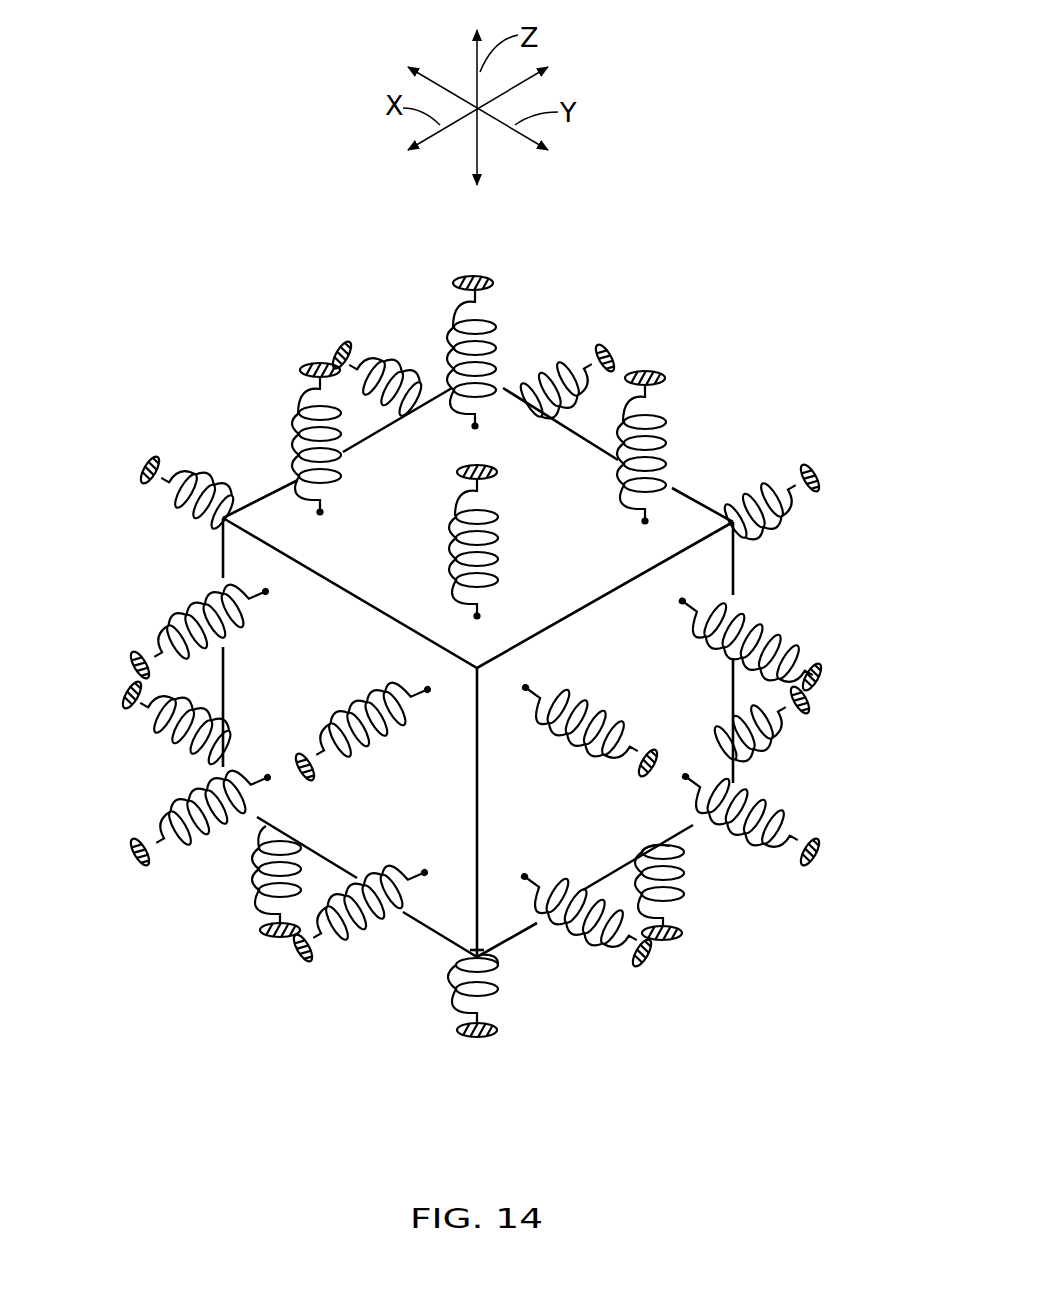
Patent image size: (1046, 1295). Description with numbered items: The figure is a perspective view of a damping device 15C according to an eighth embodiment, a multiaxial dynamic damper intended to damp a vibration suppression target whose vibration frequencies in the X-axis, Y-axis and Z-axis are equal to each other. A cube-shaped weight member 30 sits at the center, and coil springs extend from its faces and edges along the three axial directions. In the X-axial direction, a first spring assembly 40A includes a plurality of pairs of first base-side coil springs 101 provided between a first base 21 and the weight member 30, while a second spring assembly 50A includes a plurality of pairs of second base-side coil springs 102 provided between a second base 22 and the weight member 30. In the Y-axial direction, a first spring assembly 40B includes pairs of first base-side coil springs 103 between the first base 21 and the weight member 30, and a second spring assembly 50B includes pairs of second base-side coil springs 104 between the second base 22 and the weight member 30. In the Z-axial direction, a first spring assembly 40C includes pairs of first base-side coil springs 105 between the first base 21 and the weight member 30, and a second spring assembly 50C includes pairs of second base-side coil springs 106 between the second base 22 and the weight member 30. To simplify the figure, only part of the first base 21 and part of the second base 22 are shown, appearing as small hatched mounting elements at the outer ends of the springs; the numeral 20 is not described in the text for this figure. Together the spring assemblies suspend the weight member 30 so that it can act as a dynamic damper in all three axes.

The damping device 15C is at (652, 235).
The frame 20 is at (453, 1047).
The first base 21 is at (128, 660).
The second base 22 is at (143, 462).
The weight member 30 is at (695, 500).
The first spring assembly 40A is at (348, 965).
The first spring assembly 40B is at (845, 838).
The first spring assembly 40C is at (520, 1005).
The second spring assembly 50A is at (838, 512).
The second spring assembly 50B is at (188, 445).
The second spring assembly 50C is at (713, 365).
The first base-side coil springs 101 is at (165, 630).
The second base-side coil springs 102 is at (727, 554).
The first base-side coil springs 103 is at (780, 620).
The second base-side coil springs 104 is at (269, 551).
The first base-side coil springs 105 is at (255, 870).
The second base-side coil springs 106 is at (457, 324).